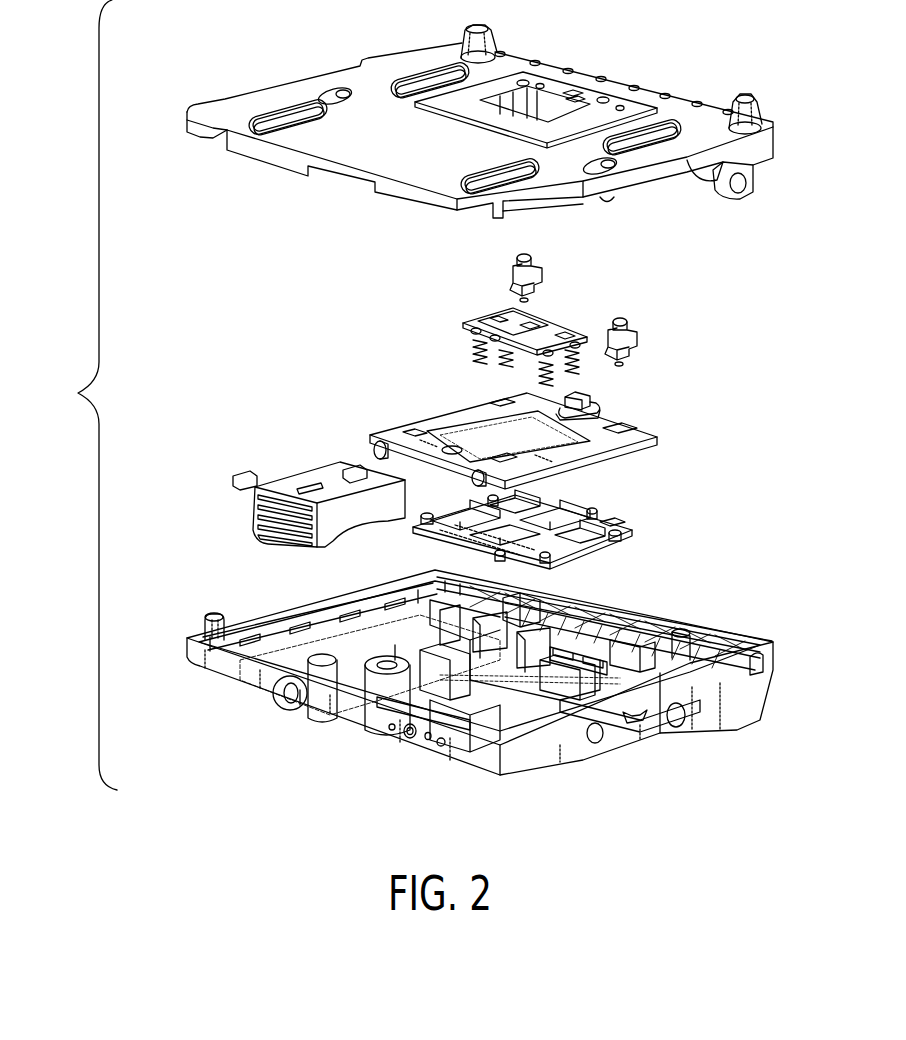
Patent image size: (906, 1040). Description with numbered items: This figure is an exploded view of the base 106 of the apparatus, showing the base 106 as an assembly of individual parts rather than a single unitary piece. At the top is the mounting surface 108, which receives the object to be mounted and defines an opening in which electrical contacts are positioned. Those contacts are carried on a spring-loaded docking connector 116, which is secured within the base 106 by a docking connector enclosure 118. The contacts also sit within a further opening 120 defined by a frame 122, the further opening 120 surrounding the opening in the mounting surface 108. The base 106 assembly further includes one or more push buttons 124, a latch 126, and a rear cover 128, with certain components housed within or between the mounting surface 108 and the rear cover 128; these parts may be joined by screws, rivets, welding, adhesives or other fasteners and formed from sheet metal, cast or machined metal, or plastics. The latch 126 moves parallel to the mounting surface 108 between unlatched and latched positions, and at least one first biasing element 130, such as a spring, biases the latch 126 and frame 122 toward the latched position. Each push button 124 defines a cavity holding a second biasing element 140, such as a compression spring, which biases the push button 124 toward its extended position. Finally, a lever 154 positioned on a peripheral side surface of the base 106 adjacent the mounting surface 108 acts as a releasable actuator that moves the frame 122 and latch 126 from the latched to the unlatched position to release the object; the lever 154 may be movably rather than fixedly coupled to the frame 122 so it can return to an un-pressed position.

The base 106 is at (78, 393).
The mounting surface 108 is at (335, 144).
The spring-loaded docking connector 116 is at (463, 325).
The docking connector enclosure 118 is at (630, 540).
The further opening 120 is at (543, 437).
The frame 122 is at (637, 445).
The push buttons 124 is at (524, 296).
The latch 126 is at (592, 398).
The rear cover 128 is at (299, 712).
The first biasing element 130 is at (478, 472).
The second biasing element 140 is at (622, 362).
The lever 154 is at (252, 497).